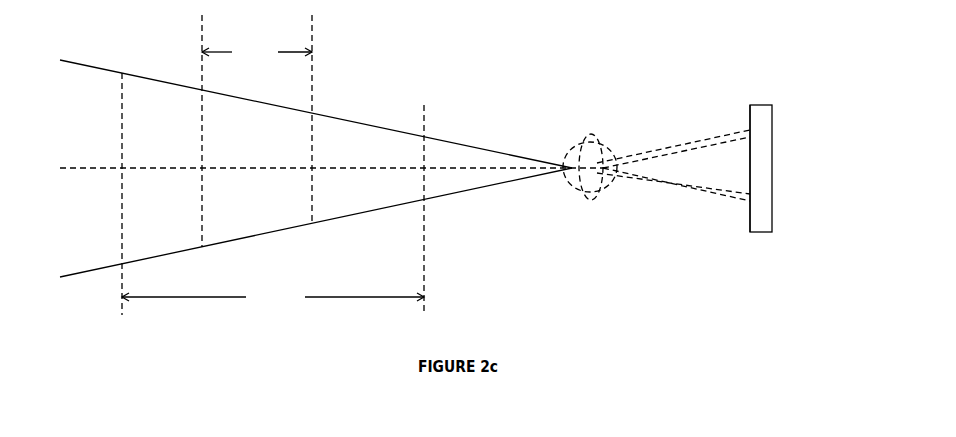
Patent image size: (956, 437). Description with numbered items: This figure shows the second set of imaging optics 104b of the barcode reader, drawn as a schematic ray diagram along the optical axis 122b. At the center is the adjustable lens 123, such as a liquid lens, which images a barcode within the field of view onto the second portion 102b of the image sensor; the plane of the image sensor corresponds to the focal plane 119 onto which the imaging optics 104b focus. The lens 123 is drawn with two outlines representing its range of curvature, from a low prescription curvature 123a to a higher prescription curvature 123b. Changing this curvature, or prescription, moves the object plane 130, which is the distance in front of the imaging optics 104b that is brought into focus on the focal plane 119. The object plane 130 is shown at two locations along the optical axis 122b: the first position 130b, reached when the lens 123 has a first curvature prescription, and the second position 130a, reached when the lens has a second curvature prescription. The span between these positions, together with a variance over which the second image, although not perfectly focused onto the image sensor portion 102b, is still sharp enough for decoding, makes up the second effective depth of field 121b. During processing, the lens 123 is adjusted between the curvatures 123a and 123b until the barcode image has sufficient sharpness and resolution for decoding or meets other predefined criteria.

The second portion of the image sensor 102b is at (796, 168).
The focal plane 119 is at (775, 148).
The second set of imaging optics 104b is at (640, 249).
The adjustable lens 123 is at (580, 140).
The low prescription curvature 123a is at (614, 144).
The higher prescription curvature 123b is at (615, 154).
The optical axis 122b is at (94, 194).
The object plane 130 is at (257, 52).
The second position of the object plane 130a is at (169, 129).
The first position of the object plane 130b is at (347, 118).
The second effective depth of field 121b is at (273, 210).